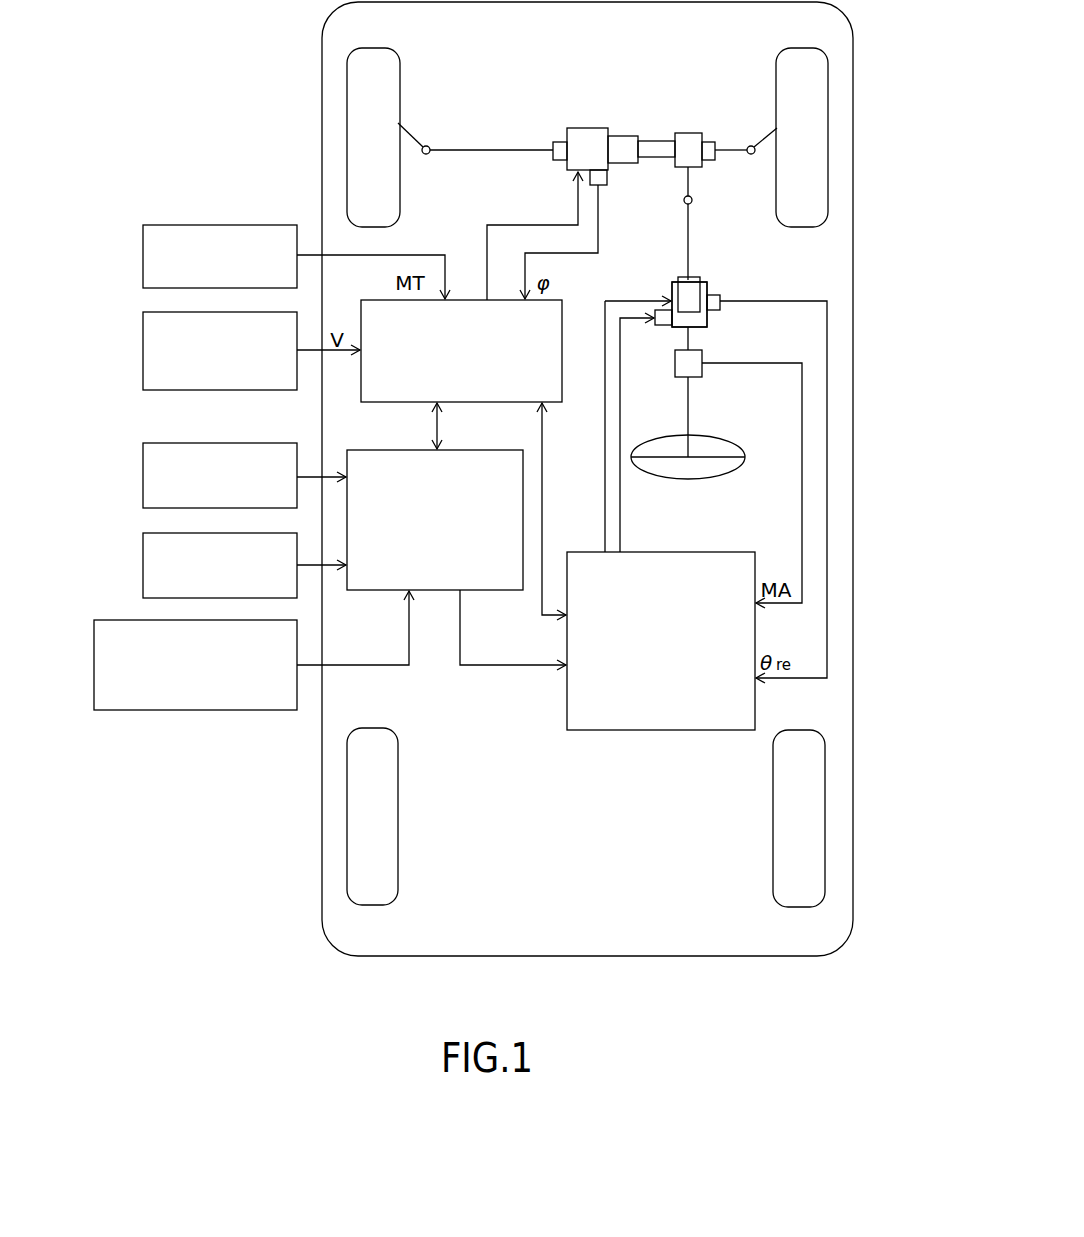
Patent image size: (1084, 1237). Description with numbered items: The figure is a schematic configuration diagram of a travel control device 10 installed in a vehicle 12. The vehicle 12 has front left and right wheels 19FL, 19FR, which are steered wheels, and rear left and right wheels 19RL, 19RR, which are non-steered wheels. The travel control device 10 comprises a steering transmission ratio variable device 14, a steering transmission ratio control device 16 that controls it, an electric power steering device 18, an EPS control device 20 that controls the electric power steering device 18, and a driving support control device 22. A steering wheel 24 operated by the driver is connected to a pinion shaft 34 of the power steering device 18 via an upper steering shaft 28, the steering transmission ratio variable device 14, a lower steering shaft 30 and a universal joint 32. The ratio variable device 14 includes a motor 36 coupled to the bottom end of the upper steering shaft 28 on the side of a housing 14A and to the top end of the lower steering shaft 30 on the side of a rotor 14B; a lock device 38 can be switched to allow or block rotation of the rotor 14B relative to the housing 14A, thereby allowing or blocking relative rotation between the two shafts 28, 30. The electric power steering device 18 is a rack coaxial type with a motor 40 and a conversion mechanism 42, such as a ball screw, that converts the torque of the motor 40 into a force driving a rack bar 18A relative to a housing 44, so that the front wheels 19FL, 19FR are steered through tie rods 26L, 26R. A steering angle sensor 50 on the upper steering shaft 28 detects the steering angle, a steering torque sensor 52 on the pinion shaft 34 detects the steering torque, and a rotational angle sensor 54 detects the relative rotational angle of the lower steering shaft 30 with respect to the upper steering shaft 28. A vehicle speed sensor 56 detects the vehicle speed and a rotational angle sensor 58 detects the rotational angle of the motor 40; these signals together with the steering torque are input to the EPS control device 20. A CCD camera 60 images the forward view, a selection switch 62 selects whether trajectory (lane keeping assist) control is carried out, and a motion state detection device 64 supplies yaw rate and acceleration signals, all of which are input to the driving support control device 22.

The travel control device 10 is at (588, 479).
The vehicle 12 is at (853, 432).
The steering transmission ratio variable device 14 is at (690, 306).
The housing 14A is at (704, 282).
The rotor 14B is at (683, 285).
The steering transmission ratio control device 16 is at (661, 641).
The electric power steering device 18 is at (587, 148).
The rack bar 18A is at (485, 149).
The front left wheel 19FL is at (347, 154).
The front right wheel 19FR is at (828, 148).
The rear left wheel 19RL is at (347, 818).
The rear right wheel 19RR is at (825, 825).
The EPS control device 20 is at (461, 351).
The driving support control device 22 is at (435, 520).
The steering wheel 24 is at (703, 478).
The tie rod 26L is at (412, 137).
The tie rod 26R is at (770, 130).
The upper steering shaft 28 is at (687, 412).
The lower steering shaft 30 is at (692, 222).
The universal joint 32 is at (684, 200).
The pinion shaft 34 is at (695, 170).
The motor 36 is at (668, 296).
The lock device 38 is at (660, 328).
The motor 40 is at (589, 128).
The conversion mechanism 42 is at (628, 136).
The housing 44 is at (558, 162).
The steering angle sensor 50 is at (695, 377).
The steering torque sensor 52 is at (199, 225).
The rotational angle sensor 54 is at (722, 299).
The vehicle speed sensor 56 is at (143, 362).
The rotational angle sensor 58 is at (606, 180).
The CCD camera 60 is at (224, 443).
The selection switch 62 is at (143, 568).
The motion state detection device 64 is at (207, 712).